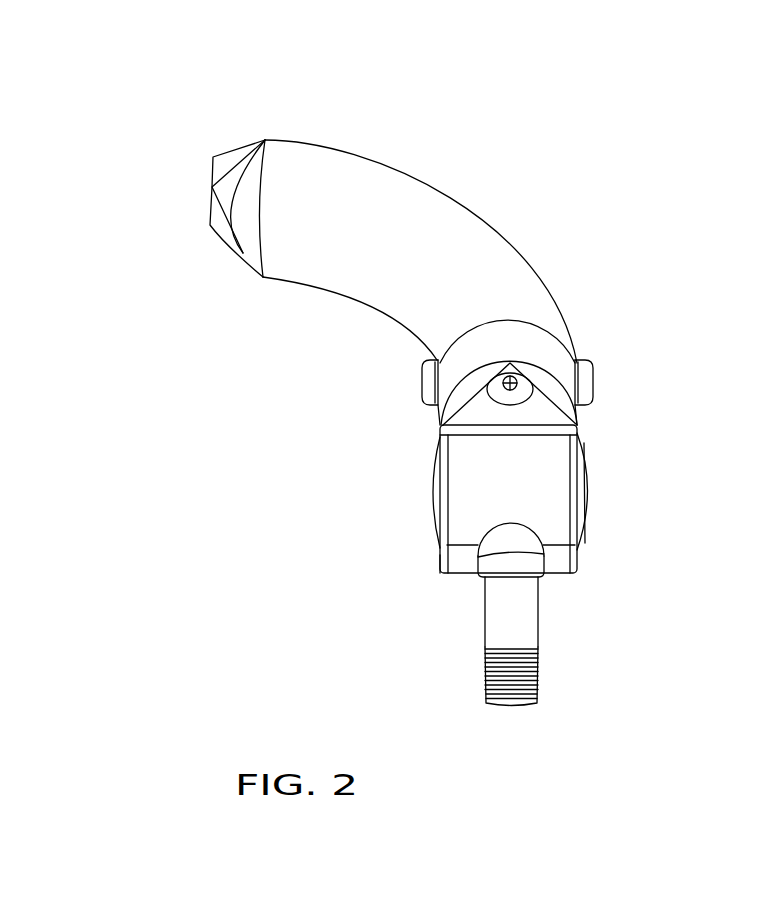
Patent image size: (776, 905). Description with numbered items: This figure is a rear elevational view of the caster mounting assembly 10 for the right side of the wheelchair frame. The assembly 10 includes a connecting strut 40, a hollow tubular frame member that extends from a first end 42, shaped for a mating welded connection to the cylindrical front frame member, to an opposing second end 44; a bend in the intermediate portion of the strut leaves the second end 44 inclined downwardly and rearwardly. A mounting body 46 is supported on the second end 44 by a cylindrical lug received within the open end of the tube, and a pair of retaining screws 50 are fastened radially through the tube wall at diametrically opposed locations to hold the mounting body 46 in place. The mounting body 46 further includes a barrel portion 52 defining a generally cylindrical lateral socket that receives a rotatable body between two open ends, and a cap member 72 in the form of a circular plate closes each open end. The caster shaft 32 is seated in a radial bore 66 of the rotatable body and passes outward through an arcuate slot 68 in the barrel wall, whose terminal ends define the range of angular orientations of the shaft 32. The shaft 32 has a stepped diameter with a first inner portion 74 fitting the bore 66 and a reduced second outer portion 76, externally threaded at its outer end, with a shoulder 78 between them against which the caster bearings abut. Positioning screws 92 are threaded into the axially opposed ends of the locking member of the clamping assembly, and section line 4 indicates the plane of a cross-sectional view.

The section line 4- 4 is at (480, 82).
The mounting assembly 10 is at (143, 493).
The caster shaft 32 is at (540, 627).
The connecting strut 40 is at (522, 262).
The first end 42 is at (268, 135).
The second end 44 is at (548, 368).
The mounting body 46 is at (455, 408).
The retaining screws 50 is at (423, 375).
The barrel portion 52 is at (566, 448).
The radial bore 66 is at (533, 550).
The slot 68 is at (440, 548).
The cap member 72 is at (430, 527).
The first inner portion 74 is at (502, 563).
The second outer portion 76 is at (483, 652).
The shoulder 78 is at (520, 582).
The positioning screws 92 is at (500, 402).